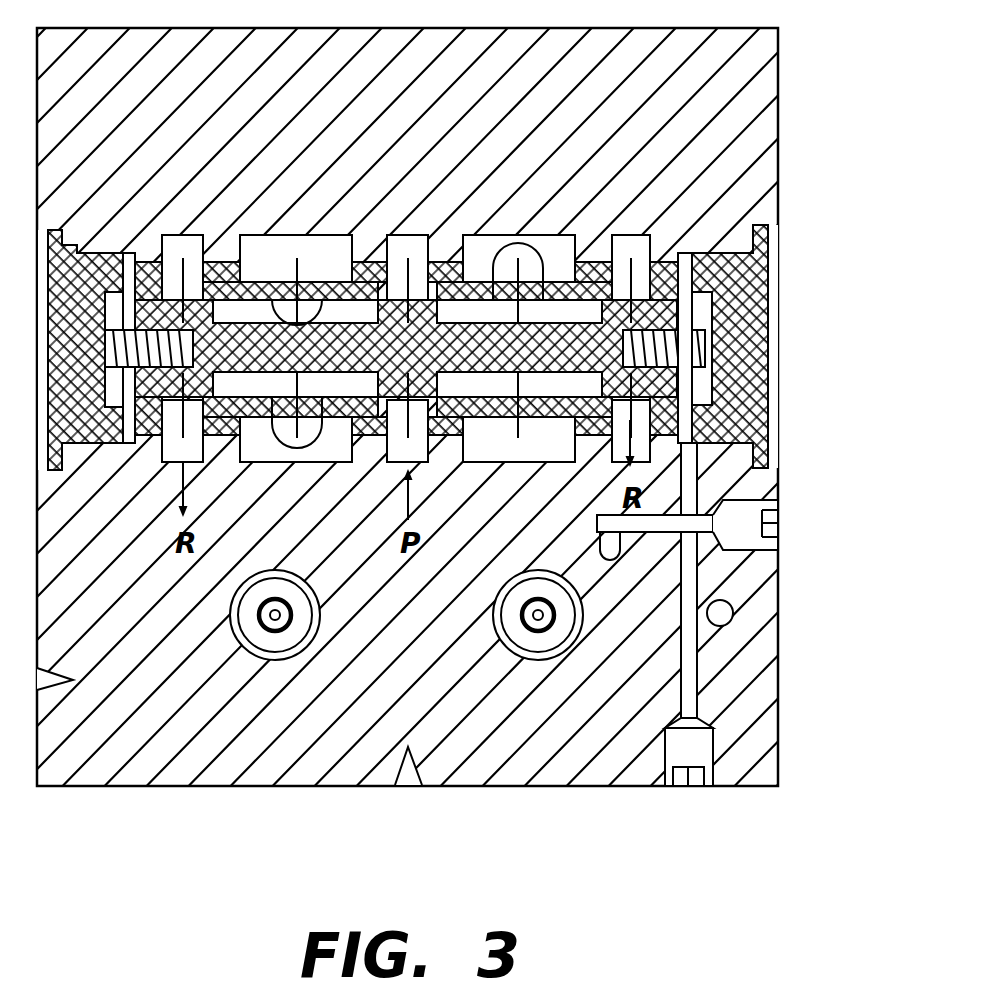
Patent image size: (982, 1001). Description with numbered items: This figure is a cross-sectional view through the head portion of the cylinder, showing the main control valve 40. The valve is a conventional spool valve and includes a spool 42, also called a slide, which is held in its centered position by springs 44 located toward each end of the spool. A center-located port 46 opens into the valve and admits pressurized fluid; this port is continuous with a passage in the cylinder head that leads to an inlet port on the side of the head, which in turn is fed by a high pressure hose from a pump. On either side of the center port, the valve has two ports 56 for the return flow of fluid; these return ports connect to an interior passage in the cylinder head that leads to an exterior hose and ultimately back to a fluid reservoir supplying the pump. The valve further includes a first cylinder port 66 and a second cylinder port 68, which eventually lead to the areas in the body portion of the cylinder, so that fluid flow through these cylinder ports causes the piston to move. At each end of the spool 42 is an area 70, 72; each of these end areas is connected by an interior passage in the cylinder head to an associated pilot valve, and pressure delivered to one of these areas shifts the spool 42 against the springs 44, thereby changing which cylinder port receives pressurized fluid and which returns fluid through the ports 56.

The main control valve 40 is at (158, 542).
The spool 42 is at (658, 310).
The springs 44 is at (112, 338).
The center-located port 46 is at (422, 462).
The ports 56 is at (193, 463).
The first cylinder port 66 is at (267, 260).
The second cylinder port 68 is at (540, 440).
The area 70 is at (130, 412).
The area 72 is at (687, 420).